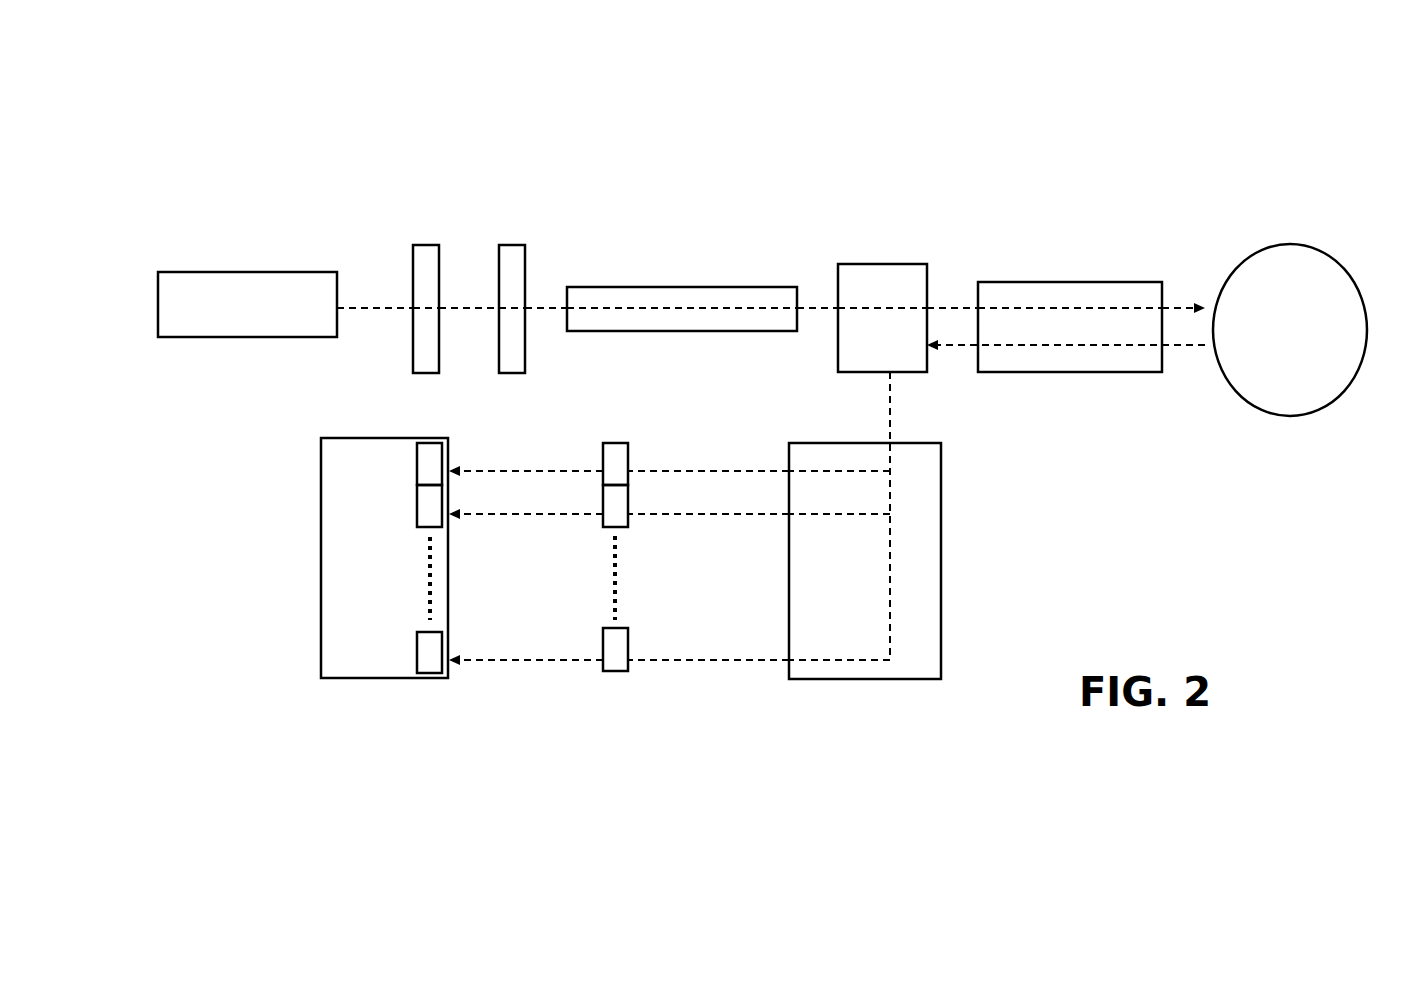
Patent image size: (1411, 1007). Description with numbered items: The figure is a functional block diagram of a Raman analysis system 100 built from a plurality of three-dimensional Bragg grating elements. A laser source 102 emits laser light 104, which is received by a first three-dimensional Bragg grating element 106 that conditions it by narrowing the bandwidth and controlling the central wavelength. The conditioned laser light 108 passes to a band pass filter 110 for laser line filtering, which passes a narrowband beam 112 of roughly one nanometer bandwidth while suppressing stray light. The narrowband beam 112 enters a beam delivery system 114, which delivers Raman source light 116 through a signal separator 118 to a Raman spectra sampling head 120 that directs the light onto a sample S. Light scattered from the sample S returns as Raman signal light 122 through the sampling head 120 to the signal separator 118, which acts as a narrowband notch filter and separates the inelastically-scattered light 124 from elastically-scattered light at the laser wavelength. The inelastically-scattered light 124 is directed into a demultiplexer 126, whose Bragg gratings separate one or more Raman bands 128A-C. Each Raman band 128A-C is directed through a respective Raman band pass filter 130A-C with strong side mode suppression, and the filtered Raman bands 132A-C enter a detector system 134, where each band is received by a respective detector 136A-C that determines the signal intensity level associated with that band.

The Raman analysis system 100 is at (643, 31).
The laser source 102 is at (243, 272).
The laser light 104 is at (381, 315).
The first three-dimensional Bragg grating element 106 is at (415, 258).
The conditioned laser light 108 is at (465, 300).
The band pass filter 110 is at (515, 232).
The narrowband beam 112 is at (550, 302).
The beam delivery system 114 is at (668, 287).
The Raman source light 116 is at (823, 302).
The signal separator 118 is at (892, 262).
The Raman spectra sampling head 120 is at (1095, 288).
The Raman signal light 122 is at (1095, 345).
The inelastically-scattered light 124 is at (890, 415).
The demultiplexer 126 is at (923, 513).
The Raman bands 128A-C is at (700, 475).
The Raman band pass filters 130A-C is at (620, 644).
The filtered Raman bands 132A-C is at (519, 475).
The detector system 134 is at (380, 678).
The detectors 136A-C is at (417, 642).
The sample S is at (1335, 262).